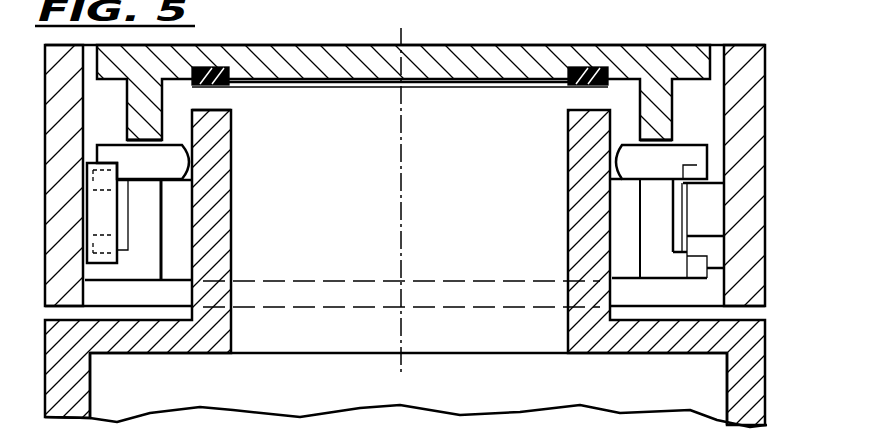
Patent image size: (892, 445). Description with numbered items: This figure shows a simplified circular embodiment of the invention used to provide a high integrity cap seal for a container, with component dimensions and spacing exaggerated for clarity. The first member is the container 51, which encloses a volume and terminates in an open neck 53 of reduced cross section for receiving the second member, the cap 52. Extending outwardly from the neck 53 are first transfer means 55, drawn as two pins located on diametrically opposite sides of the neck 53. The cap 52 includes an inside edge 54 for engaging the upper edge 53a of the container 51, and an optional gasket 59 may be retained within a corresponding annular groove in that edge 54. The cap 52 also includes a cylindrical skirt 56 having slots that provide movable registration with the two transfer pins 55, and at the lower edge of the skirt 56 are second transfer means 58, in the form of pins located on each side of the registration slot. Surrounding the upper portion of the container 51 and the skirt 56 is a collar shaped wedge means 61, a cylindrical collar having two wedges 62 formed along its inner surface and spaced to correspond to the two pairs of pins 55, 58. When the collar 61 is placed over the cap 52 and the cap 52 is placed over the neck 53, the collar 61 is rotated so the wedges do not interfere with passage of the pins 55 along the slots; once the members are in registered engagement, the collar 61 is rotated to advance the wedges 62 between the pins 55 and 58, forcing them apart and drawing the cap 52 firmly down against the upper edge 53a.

The container 51 is at (183, 335).
The cap 52 is at (543, 56).
The neck 53 is at (220, 212).
The upper edge 53a is at (205, 100).
The inside edge 54 is at (322, 82).
The first transfer means 55 is at (112, 144).
The cylindrical skirt 56 is at (666, 93).
The second transfer means 58 is at (110, 268).
The gasket 59 is at (583, 86).
The wedge means 61 is at (755, 166).
The wedges 62 is at (100, 203).